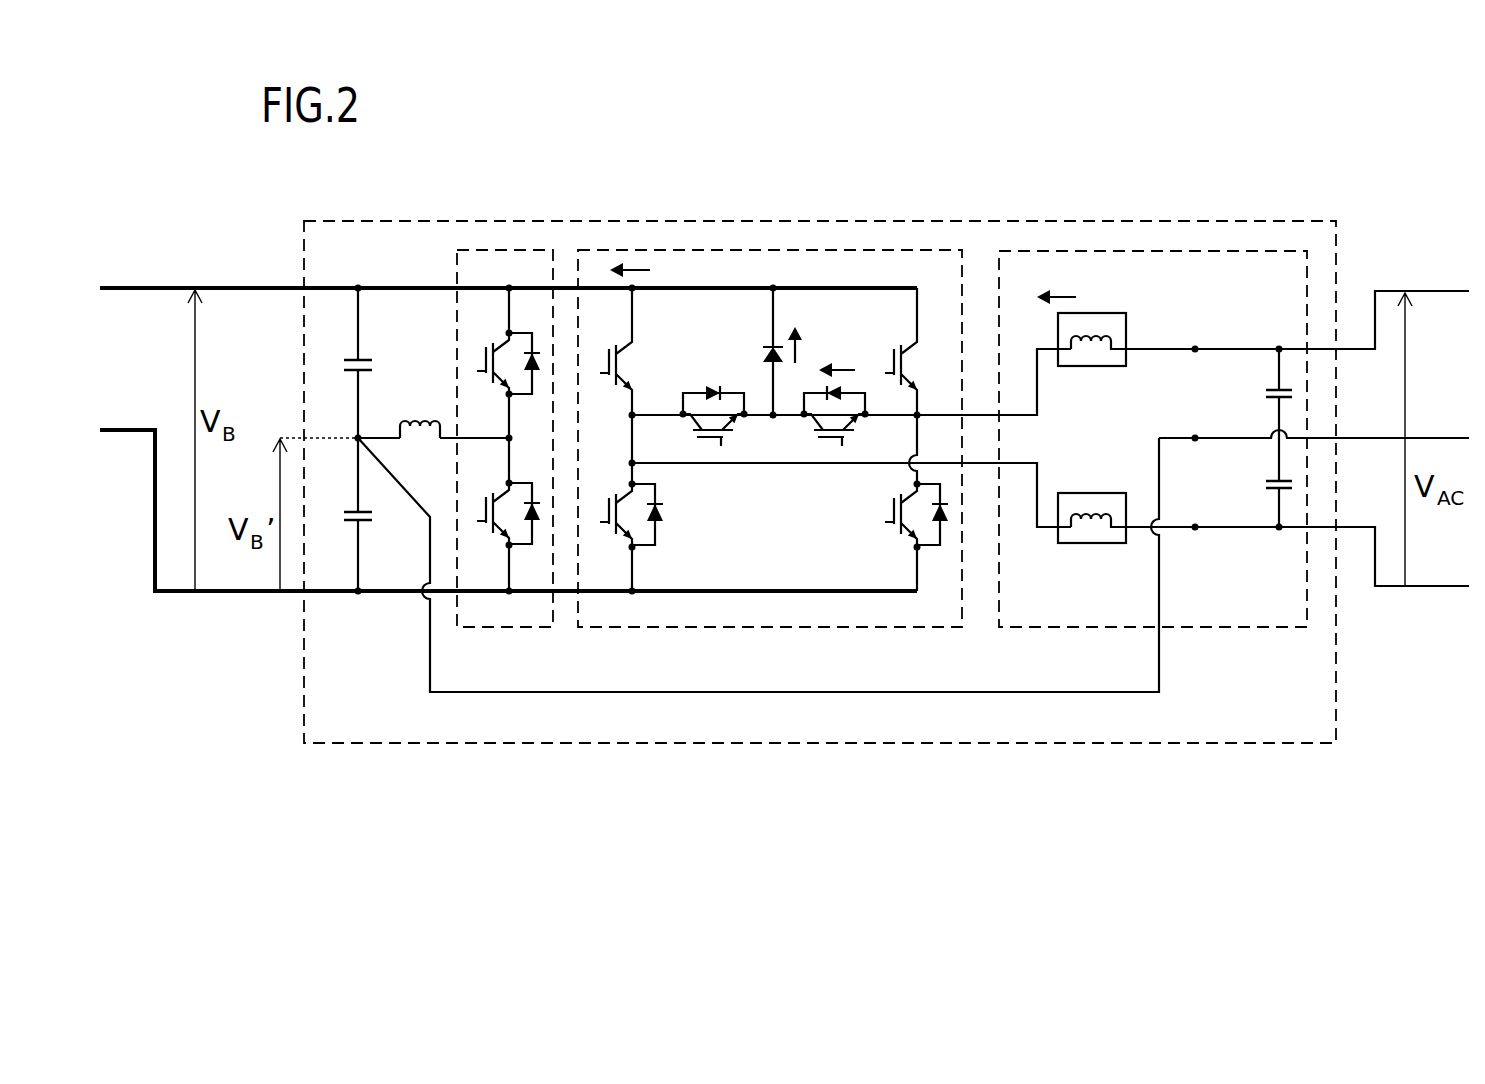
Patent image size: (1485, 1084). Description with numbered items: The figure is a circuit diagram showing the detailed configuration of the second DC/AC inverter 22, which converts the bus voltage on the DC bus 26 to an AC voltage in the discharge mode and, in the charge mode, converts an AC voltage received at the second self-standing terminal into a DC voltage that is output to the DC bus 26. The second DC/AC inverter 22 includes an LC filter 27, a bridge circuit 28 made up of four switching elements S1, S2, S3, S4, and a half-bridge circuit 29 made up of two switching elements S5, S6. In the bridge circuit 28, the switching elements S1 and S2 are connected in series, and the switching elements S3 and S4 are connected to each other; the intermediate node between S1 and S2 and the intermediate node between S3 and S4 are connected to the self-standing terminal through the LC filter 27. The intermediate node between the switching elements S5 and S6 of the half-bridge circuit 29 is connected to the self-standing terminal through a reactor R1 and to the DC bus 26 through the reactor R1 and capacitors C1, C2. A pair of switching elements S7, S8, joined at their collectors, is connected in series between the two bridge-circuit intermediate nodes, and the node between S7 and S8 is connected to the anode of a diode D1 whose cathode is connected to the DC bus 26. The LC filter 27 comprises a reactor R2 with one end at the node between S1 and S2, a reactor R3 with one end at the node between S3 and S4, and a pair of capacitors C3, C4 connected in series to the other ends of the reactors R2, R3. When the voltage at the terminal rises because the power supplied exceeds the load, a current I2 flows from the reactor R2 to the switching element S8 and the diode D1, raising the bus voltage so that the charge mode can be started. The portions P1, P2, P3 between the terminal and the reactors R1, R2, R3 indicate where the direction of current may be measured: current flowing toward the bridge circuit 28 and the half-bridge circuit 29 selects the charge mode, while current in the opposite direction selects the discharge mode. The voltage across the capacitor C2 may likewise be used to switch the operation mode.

The second DC/AC inverter 22 is at (1302, 743).
The DC bus 26 is at (161, 286).
The LC filter 27 is at (1243, 627).
The bridge circuit 28 is at (785, 627).
The half-bridge circuit 29 is at (500, 627).
The capacitor C1 is at (353, 358).
The capacitor C2 is at (353, 512).
The capacitor C3 is at (1276, 388).
The capacitor C4 is at (1276, 477).
The reactor R1 is at (411, 420).
The reactor R2 is at (1106, 328).
The reactor R3 is at (1106, 504).
The switching element S1 is at (887, 352).
The switching element S2 is at (892, 506).
The switching element S3 is at (601, 358).
The switching element S4 is at (601, 512).
The switching element S5 is at (478, 354).
The switching element S6 is at (478, 504).
The switching element S7 is at (706, 447).
The switching element S8 is at (827, 447).
The diode D1 is at (765, 352).
The portion P1 is at (1195, 346).
The portion P2 is at (1195, 524).
The portion P3 is at (1195, 435).
The current I2 is at (636, 268).